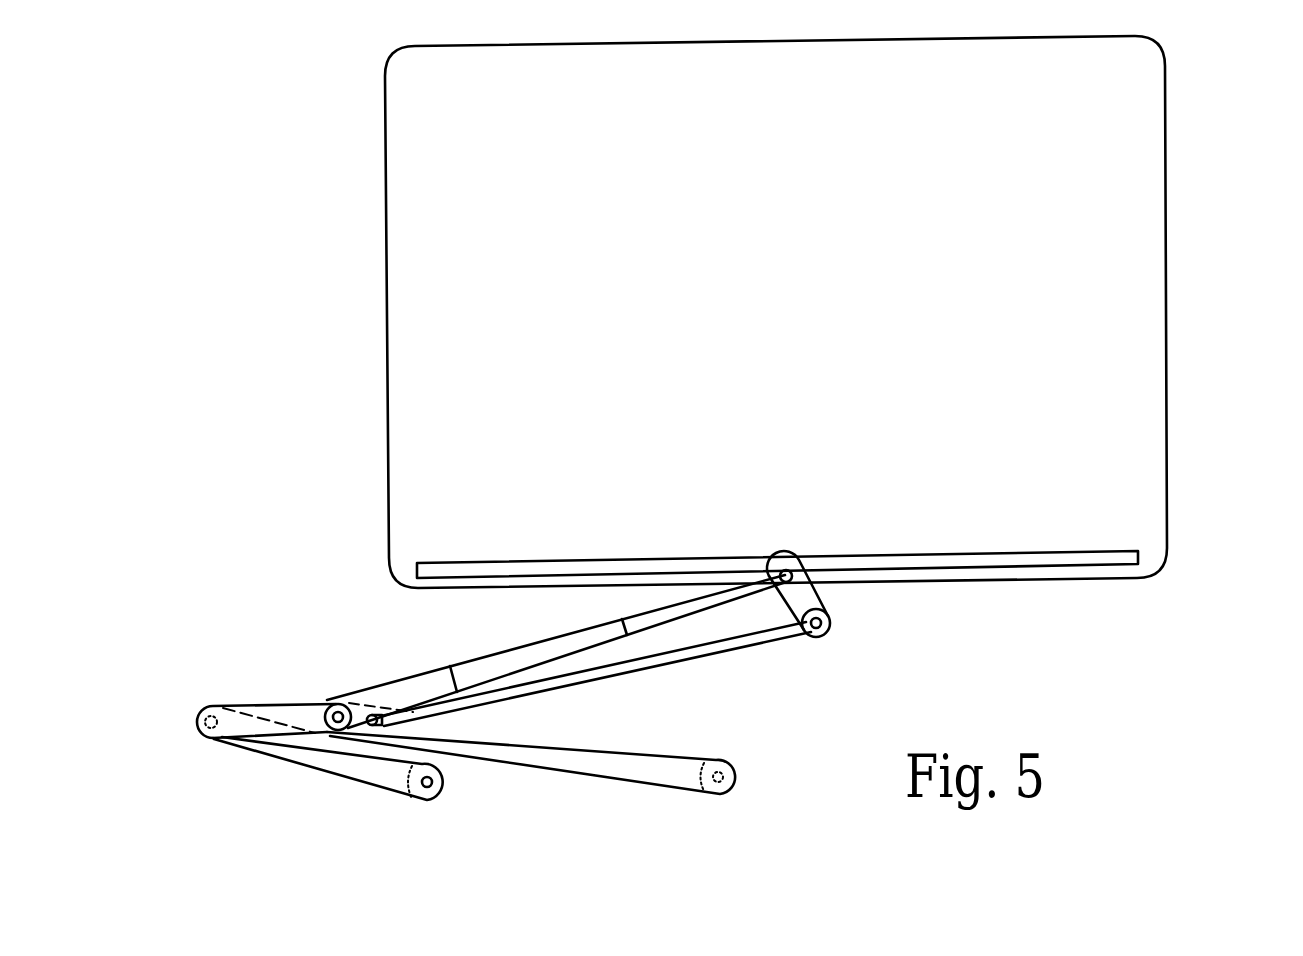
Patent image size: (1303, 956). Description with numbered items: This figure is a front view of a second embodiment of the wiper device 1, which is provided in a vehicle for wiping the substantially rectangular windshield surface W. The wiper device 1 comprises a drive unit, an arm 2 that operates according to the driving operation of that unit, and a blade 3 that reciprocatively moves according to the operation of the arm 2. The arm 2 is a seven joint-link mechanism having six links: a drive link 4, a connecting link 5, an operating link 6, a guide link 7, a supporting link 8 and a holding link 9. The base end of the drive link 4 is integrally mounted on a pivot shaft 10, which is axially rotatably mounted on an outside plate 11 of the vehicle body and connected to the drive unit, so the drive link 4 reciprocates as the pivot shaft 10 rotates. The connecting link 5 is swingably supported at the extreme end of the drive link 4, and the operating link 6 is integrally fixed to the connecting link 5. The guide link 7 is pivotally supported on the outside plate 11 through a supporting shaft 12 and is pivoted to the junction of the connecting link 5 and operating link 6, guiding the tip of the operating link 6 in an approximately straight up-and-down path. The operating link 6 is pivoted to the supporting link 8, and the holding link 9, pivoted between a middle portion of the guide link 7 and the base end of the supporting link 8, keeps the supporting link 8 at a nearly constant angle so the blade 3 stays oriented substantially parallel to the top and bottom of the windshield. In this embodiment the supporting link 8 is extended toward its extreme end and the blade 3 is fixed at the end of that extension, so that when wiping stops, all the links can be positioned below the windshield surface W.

The windshield surface W is at (1164, 200).
The wiper device 1 is at (777, 482).
The arm 2 is at (380, 662).
The blade 3 is at (1073, 557).
The drive link 4 is at (328, 816).
The connecting link 5 is at (300, 713).
The operating link 6 is at (560, 640).
The guide link 7 is at (534, 809).
The supporting link 8 is at (806, 600).
The holding link 9 is at (693, 653).
The pivot shaft 10 is at (424, 801).
The outside plate 11 is at (989, 688).
The supporting shaft 12 is at (722, 795).